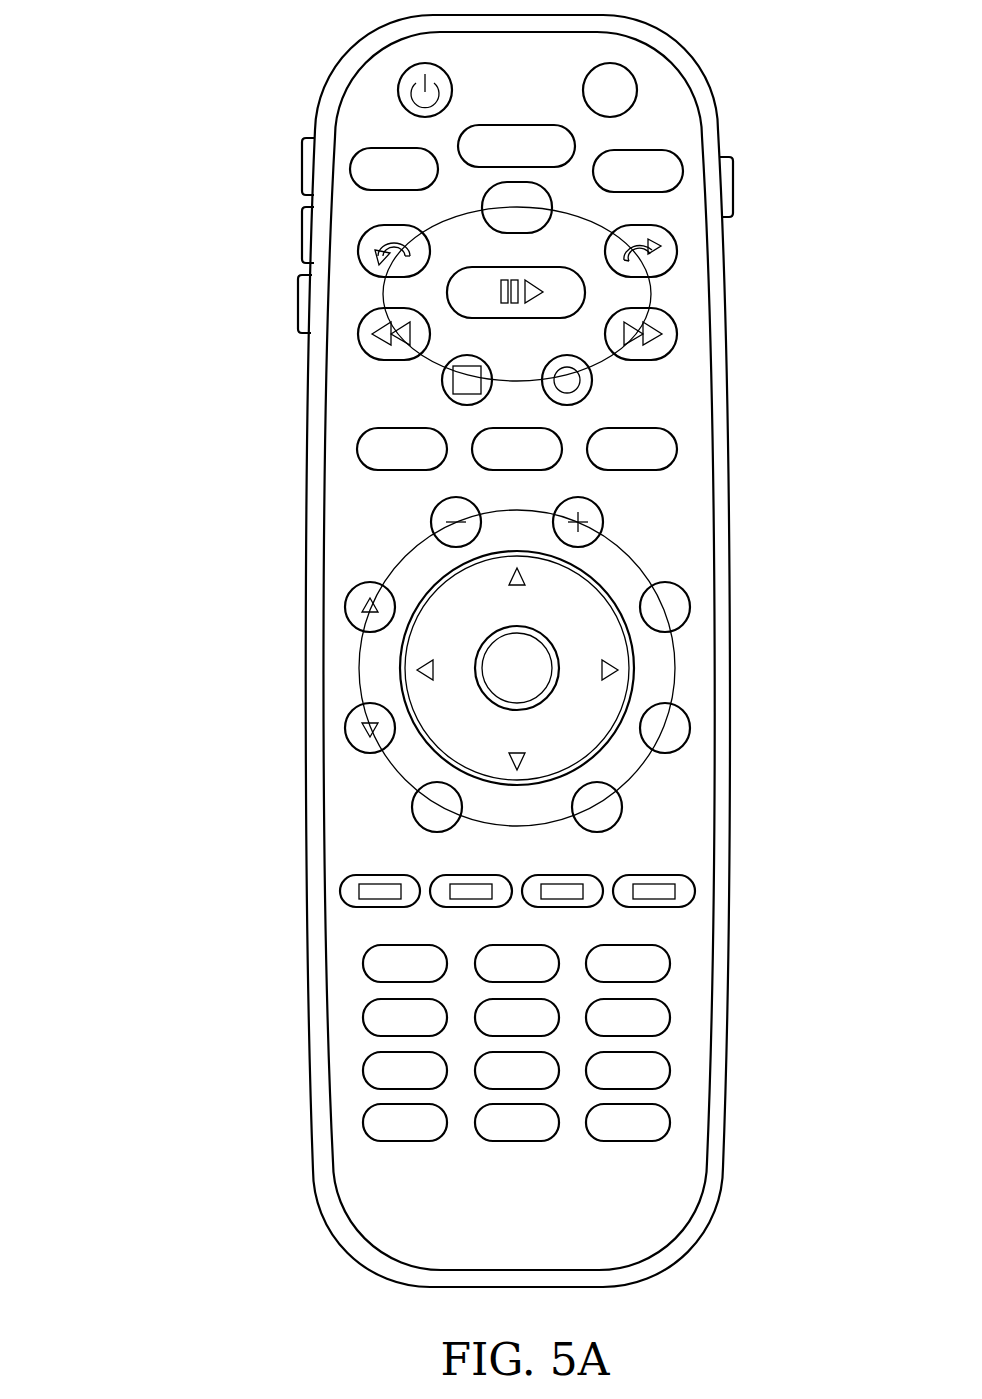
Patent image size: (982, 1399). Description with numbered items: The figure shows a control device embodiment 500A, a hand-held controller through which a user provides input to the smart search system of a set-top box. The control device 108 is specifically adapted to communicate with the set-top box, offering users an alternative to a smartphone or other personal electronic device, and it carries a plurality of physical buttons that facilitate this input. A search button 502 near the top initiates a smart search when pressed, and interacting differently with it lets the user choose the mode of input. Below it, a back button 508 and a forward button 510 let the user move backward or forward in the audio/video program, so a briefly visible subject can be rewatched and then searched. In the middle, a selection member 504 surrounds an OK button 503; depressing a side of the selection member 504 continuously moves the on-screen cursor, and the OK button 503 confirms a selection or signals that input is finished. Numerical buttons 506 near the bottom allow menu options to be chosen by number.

The control device embodiment 500A is at (444, 643).
The control device 108 is at (515, 643).
The search button 502 is at (709, 153).
The OK button 503 is at (644, 668).
The selection member 504 is at (602, 633).
The numerical buttons 506 is at (592, 1035).
The back button 508 is at (326, 247).
The forward button 510 is at (715, 249).